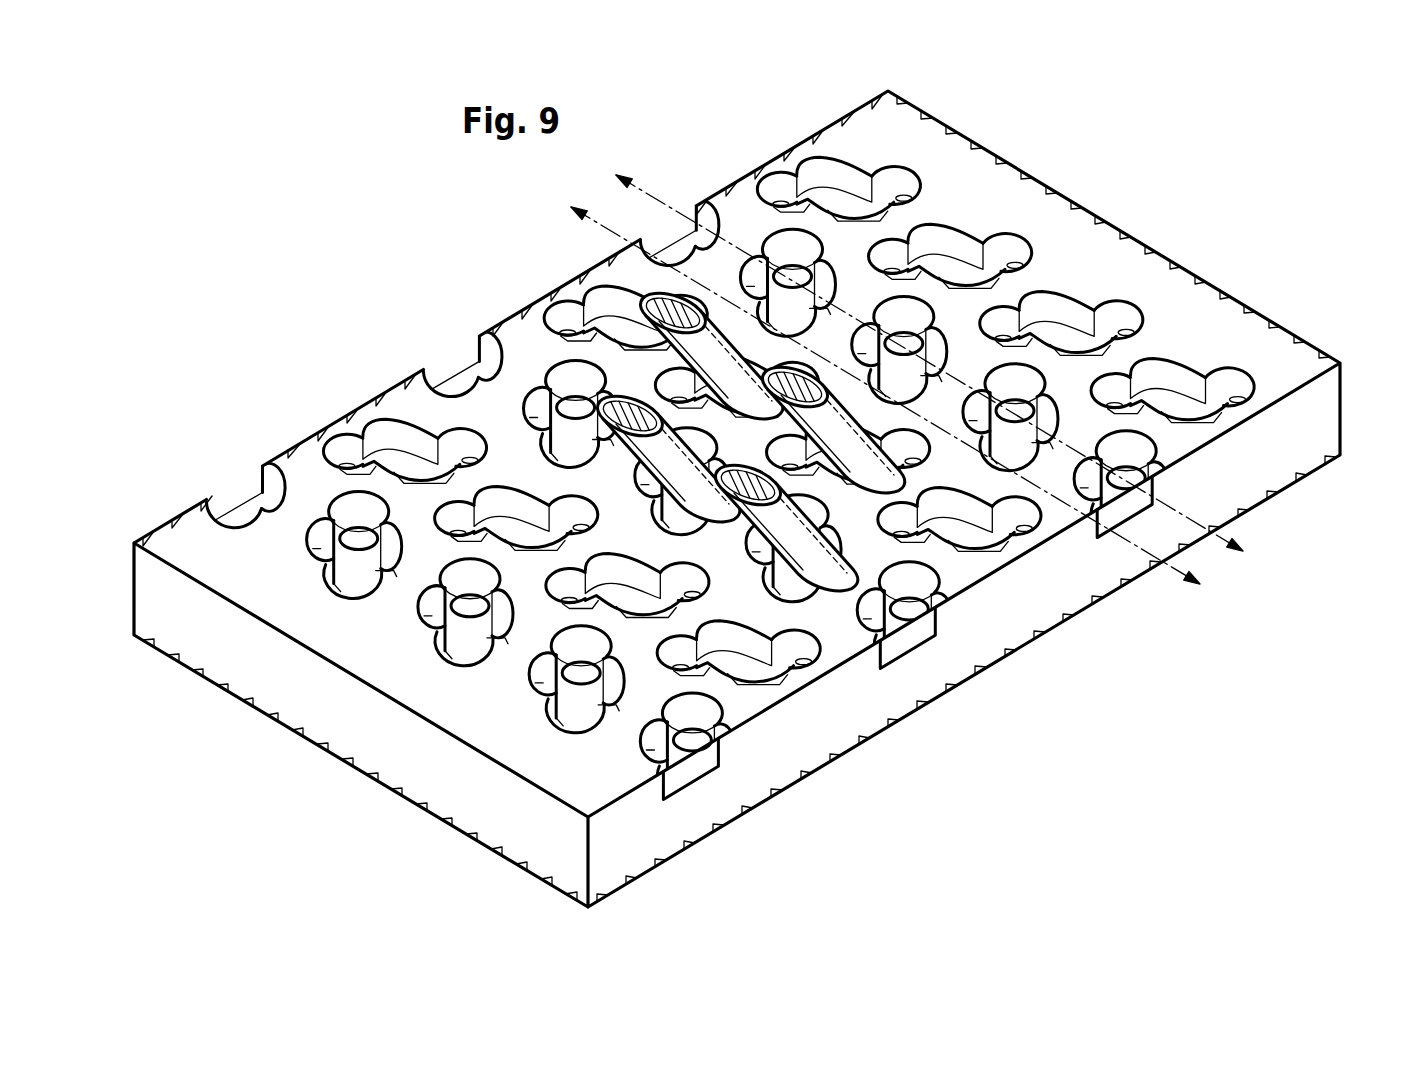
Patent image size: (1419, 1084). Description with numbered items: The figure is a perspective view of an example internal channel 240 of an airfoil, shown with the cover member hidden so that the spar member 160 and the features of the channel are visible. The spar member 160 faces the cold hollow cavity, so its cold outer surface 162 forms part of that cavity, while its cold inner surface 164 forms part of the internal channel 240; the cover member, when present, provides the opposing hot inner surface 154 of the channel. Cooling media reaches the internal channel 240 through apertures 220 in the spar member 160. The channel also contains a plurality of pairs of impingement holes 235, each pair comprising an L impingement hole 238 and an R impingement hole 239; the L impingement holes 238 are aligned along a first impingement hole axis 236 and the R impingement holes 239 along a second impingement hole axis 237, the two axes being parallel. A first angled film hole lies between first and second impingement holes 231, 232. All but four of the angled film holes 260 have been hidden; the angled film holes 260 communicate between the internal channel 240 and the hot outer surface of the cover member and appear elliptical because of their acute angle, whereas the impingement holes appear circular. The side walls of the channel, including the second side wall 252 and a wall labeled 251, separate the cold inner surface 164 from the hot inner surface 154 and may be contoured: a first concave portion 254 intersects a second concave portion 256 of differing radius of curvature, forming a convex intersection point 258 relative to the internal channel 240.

The hot inner surface 154 is at (687, 728).
The spar member 160 is at (1310, 443).
The cold outer surface 162 is at (1283, 487).
The cold inner surface 164 is at (700, 767).
The aperture 220 is at (782, 252).
The first impingement hole 231 is at (391, 547).
The second impingement hole 232 is at (347, 552).
The pair of impingement holes 235 is at (552, 718).
The first impingement hole axis 236 is at (647, 192).
The second impingement hole axis 237 is at (596, 220).
The L impingement hole 238 is at (252, 517).
The R impingement hole 239 is at (297, 482).
The internal channel 240 is at (1134, 530).
The lower lobe 251 is at (289, 653).
The second side wall 252 is at (357, 439).
The first concave portion 254 is at (962, 190).
The second concave portion 256 is at (1027, 236).
The convex intersection point 258 is at (1046, 208).
The angled film hole 260 is at (650, 308).